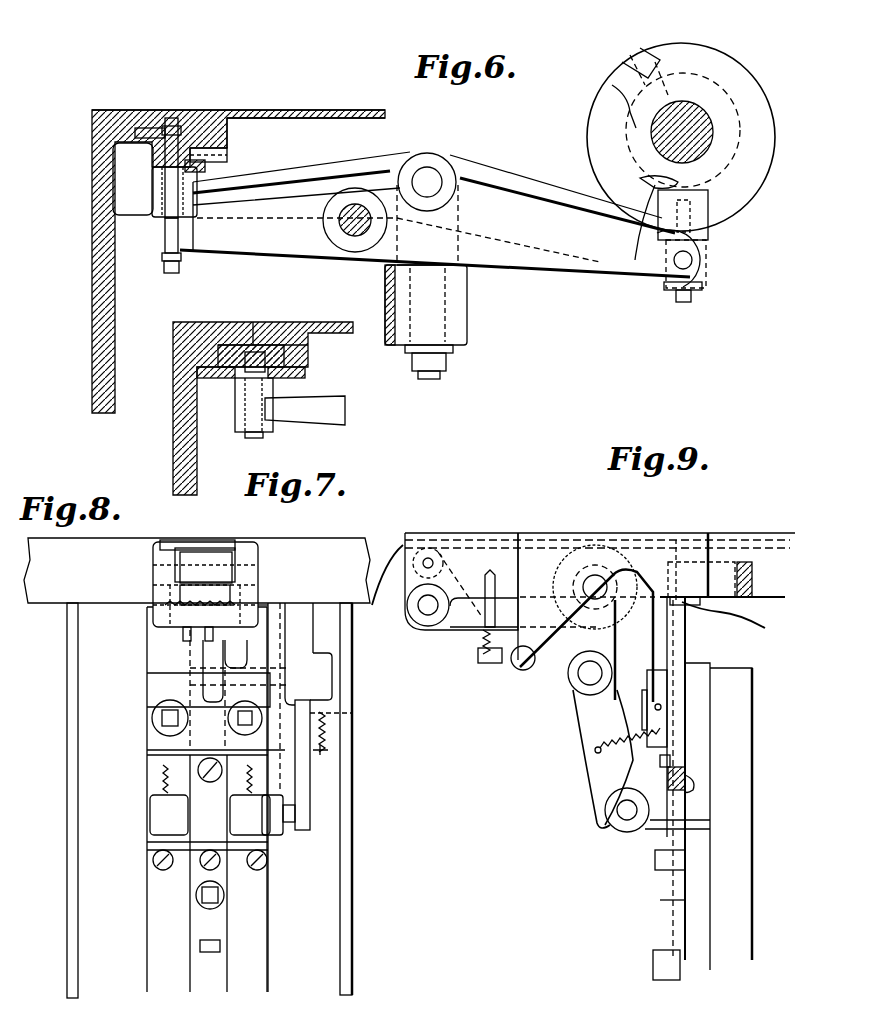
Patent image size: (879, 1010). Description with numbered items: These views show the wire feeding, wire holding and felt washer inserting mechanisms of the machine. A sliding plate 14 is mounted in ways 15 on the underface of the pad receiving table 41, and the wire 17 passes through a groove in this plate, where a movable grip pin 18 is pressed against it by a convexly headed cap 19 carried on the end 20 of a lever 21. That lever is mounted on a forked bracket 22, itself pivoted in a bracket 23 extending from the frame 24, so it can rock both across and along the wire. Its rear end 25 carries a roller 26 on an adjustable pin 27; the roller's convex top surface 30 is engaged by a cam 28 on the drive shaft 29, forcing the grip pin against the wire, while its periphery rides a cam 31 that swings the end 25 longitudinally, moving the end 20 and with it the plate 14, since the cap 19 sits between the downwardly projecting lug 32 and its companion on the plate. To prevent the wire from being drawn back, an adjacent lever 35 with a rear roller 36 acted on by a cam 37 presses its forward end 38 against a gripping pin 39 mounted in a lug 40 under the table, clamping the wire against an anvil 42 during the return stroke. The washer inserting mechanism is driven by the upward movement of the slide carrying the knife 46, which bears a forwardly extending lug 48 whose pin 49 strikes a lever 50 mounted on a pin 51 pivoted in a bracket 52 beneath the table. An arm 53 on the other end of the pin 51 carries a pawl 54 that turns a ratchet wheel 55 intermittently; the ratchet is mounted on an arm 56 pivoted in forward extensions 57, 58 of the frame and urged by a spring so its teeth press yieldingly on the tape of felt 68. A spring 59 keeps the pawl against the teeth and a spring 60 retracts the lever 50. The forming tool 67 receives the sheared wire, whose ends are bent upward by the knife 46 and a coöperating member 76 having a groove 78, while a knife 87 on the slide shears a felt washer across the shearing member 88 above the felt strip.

In FIG. 6, the sliding plate 14 is at (148, 128).
In FIG. 7, the sliding plate 14 is at (232, 345).
In FIG. 7, the ways 15 is at (284, 355).
In FIG. 6, the wire 17 is at (224, 115).
In FIG. 7, the wire 17 is at (253, 322).
In FIG. 9, the wire 17 is at (680, 597).
In FIG. 7, the grip pin 18 is at (210, 360).
In FIG. 6, the cap 19 is at (152, 198).
In FIG. 7, the cap 19 is at (235, 395).
In FIG. 6, the end of lever 20 is at (208, 195).
In FIG. 7, the end of lever 20 is at (240, 425).
In FIG. 6, the lever 21 is at (255, 190).
In FIG. 7, the lever 21 is at (315, 415).
In FIG. 6, the forked bracket 22 is at (455, 240).
In FIG. 6, the bracket 23 is at (460, 330).
In FIG. 6, the frame 24 is at (115, 305).
In FIG. 9, the frame 24 is at (530, 640).
In FIG. 6, the rear end of lever 25 is at (707, 240).
In FIG. 6, the roller 26 is at (708, 205).
In FIG. 6, the pin 27 is at (635, 260).
In FIG. 6, the cam 28 is at (616, 63).
In FIG. 6, the drive shaft 29 is at (700, 108).
In FIG. 6, the convex top surface 30 is at (640, 178).
In FIG. 6, the cam 31 is at (655, 60).
In FIG. 6, the downwardly projecting lug 32 is at (200, 172).
In FIG. 7, the downwardly projecting lug 32 is at (268, 378).
In FIG. 6, the lever 35 is at (515, 258).
In FIG. 6, the roller 36 is at (710, 268).
In FIG. 6, the cam 37 is at (588, 140).
In FIG. 6, the forward end 38 is at (165, 245).
In FIG. 6, the gripping pin 39 is at (215, 150).
In FIG. 6, the lug 40 is at (140, 160).
In FIG. 6, the pad receiving table 41 is at (268, 108).
In FIG. 8, the pad receiving table 41 is at (205, 540).
In FIG. 9, the pad receiving table 41 is at (615, 533).
In FIG. 6, the anvil 42 is at (172, 118).
In FIG. 8, the knife 46 is at (147, 632).
In FIG. 8, the lug 48 is at (270, 835).
In FIG. 9, the lug 48 is at (648, 822).
In FIG. 8, the pin 49 is at (297, 812).
In FIG. 9, the pin 49 is at (622, 822).
In FIG. 8, the lever 50 is at (310, 760).
In FIG. 9, the lever 50 is at (590, 766).
In FIG. 8, the pin 51 is at (332, 672).
In FIG. 9, the pin 51 is at (585, 680).
In FIG. 8, the bracket 52 is at (283, 635).
In FIG. 9, the bracket 52 is at (595, 660).
In FIG. 8, the arm 53 is at (213, 690).
In FIG. 9, the arm 53 is at (528, 670).
In FIG. 8, the pawl 54 is at (183, 640).
In FIG. 9, the pawl 54 is at (485, 612).
In FIG. 9, the ratchet wheel 55 is at (597, 545).
In FIG. 8, the arm 56 is at (230, 590).
In FIG. 9, the arm 56 is at (458, 630).
In FIG. 8, the forward extension 57 is at (155, 548).
In FIG. 9, the forward extension 57 is at (478, 658).
In FIG. 8, the forward extension 58 is at (248, 548).
In FIG. 9, the spring 59 is at (600, 630).
In FIG. 8, the spring 60 is at (325, 735).
In FIG. 9, the spring 60 is at (612, 780).
In FIG. 9, the forming tool 67 is at (737, 560).
In FIG. 9, the tape of felt 68 is at (395, 548).
In FIG. 8, the member 76 is at (265, 612).
In FIG. 9, the member 76 is at (727, 615).
In FIG. 9, the groove 78 is at (700, 605).
In FIG. 8, the knife 87 is at (203, 655).
In FIG. 9, the knife 87 is at (685, 640).
In FIG. 8, the shearing member 88 is at (165, 605).
In FIG. 9, the shearing member 88 is at (676, 540).